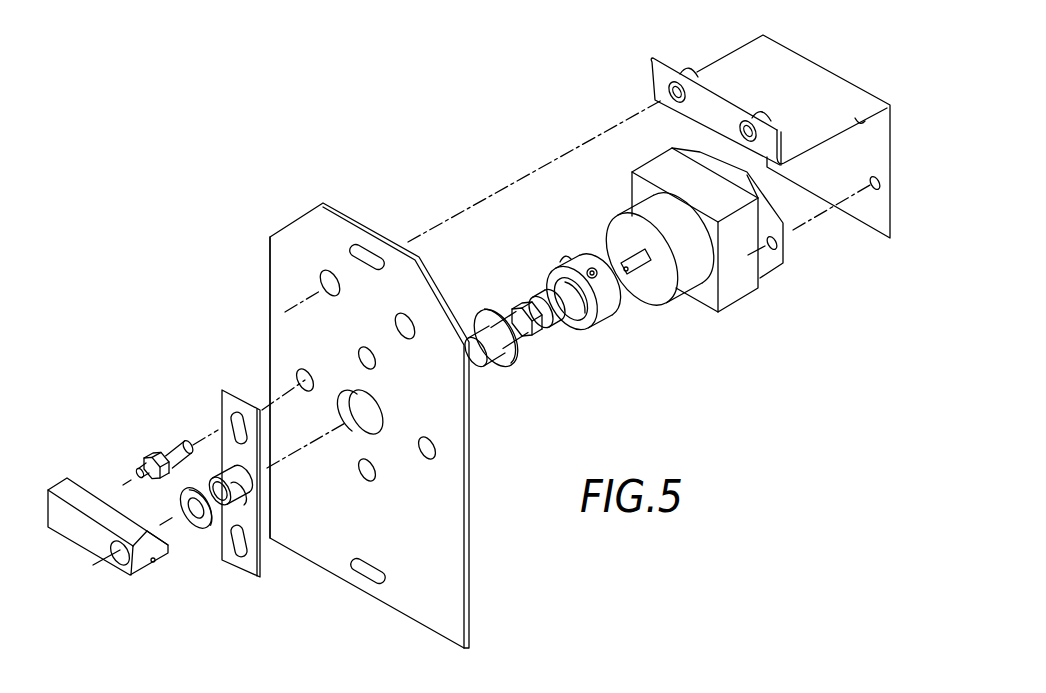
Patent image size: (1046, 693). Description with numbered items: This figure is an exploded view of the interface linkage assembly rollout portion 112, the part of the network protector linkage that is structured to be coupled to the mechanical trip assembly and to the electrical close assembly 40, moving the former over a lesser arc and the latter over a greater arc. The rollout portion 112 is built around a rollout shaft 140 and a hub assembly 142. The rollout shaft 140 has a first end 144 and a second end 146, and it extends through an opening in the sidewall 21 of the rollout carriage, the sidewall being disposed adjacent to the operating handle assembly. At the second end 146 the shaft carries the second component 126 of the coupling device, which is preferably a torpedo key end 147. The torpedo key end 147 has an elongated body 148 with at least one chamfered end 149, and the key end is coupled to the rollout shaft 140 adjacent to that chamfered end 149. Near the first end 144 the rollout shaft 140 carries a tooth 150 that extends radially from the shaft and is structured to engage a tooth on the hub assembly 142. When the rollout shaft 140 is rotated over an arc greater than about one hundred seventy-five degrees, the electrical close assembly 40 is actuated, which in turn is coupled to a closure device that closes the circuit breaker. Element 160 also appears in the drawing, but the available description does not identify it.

The sidewall 21 is at (278, 270).
The electrical close assembly 40 is at (740, 284).
The interface linkage assembly rollout portion 112 is at (514, 132).
The second component of the coupling device 126 is at (93, 526).
The rollout shaft 140 is at (523, 365).
The hub assembly 142 is at (606, 309).
The first end 144 is at (539, 300).
The second end 146 is at (485, 370).
The torpedo key end 147 is at (73, 530).
The elongated body 148 is at (82, 495).
The chamfered end 149 is at (137, 578).
The tooth 150 is at (521, 305).
The sleeve 160 is at (603, 323).